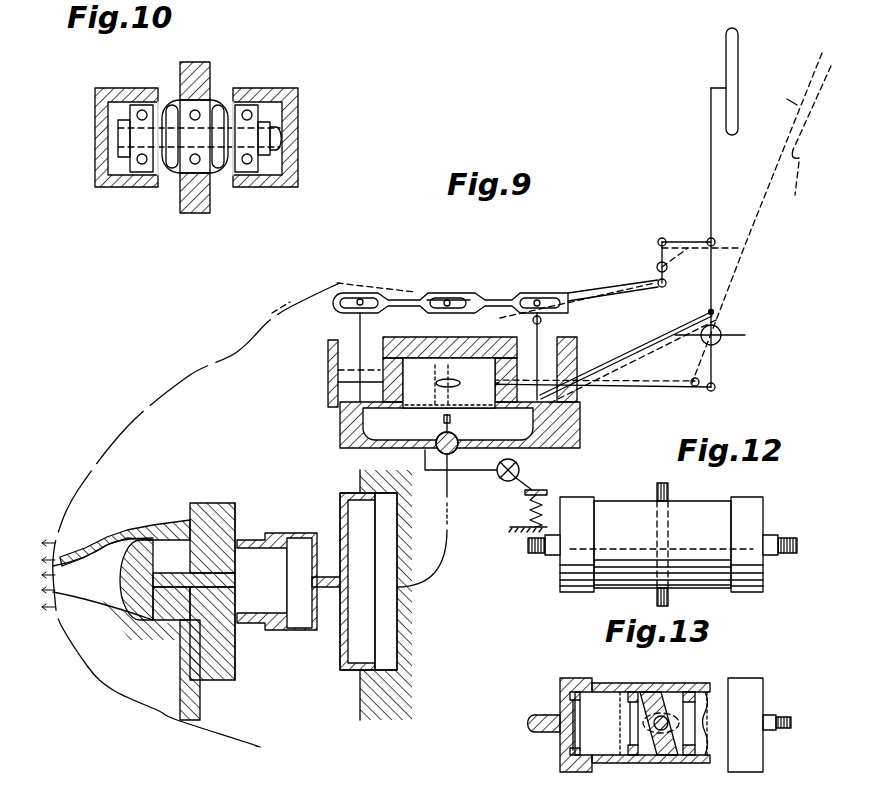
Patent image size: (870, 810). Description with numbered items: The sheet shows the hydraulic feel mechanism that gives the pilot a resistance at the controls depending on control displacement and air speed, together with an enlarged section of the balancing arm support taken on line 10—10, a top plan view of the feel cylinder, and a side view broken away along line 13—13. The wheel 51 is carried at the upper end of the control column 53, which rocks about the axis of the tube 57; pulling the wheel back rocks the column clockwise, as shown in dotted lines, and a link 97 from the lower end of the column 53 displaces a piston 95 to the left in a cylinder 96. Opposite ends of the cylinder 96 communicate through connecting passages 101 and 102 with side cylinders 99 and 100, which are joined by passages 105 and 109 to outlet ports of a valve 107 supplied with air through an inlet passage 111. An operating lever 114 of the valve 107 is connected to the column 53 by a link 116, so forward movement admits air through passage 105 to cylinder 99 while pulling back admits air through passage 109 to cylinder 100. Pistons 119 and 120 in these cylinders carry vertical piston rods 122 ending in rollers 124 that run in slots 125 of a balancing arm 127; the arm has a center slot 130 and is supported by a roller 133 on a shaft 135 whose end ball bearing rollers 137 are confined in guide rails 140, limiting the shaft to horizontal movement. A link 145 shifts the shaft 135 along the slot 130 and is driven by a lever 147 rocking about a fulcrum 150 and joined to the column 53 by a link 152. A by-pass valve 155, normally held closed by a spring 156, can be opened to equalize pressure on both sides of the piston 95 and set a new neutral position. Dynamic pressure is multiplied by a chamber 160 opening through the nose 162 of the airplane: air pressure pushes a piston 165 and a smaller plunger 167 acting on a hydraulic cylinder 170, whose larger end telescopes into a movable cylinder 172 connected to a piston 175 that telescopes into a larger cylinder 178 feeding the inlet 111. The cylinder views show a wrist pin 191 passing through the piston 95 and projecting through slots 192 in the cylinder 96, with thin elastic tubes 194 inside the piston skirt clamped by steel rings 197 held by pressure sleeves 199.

In FIG. 9, the section line 10 is at (417, 237).
In FIG. 9, the section line 13 is at (525, 540).
In FIG. 12, the section line 13 is at (720, 556).
In FIG. 9, the wheel 51 is at (732, 65).
In FIG. 9, the control column 53 is at (711, 160).
In FIG. 9, the tube 57 is at (722, 330).
In FIG. 9, the piston 95 is at (460, 362).
In FIG. 13, the piston 95 is at (662, 763).
In FIG. 9, the cylinder 96 is at (483, 362).
In FIG. 12, the cylinder 96 is at (690, 510).
In FIG. 13, the cylinder 96 is at (720, 750).
In FIG. 9, the link 97 is at (627, 388).
In FIG. 9, the side cylinder 99 is at (342, 335).
In FIG. 9, the side cylinder 100 is at (537, 360).
In FIG. 9, the connecting passage 101 is at (393, 408).
In FIG. 12, the connecting passage 101 is at (538, 556).
In FIG. 13, the connecting passage 101 is at (533, 732).
In FIG. 9, the connecting passage 102 is at (530, 455).
In FIG. 12, the connecting passage 102 is at (787, 538).
In FIG. 13, the connecting passage 102 is at (785, 715).
In FIG. 9, the passage 105 is at (363, 425).
In FIG. 9, the valve 107 is at (430, 452).
In FIG. 9, the passage 109 is at (560, 430).
In FIG. 9, the inlet passage 111 is at (447, 555).
In FIG. 9, the operating lever 114 is at (458, 432).
In FIG. 9, the link 116 is at (620, 356).
In FIG. 9, the piston 119 is at (345, 390).
In FIG. 9, the piston 120 is at (540, 380).
In FIG. 9, the piston rod 122 is at (358, 322).
In FIG. 9, the roller 124 is at (352, 300).
In FIG. 9, the slot 125 is at (370, 300).
In FIG. 10, the balancing arm 127 is at (206, 58).
In FIG. 9, the balancing arm 127 is at (412, 297).
In FIG. 10, the center slot 130 is at (203, 165).
In FIG. 9, the center slot 130 is at (430, 309).
In FIG. 10, the roller 133 is at (207, 103).
In FIG. 9, the roller 133 is at (447, 300).
In FIG. 10, the shaft 135 is at (280, 136).
In FIG. 10, the ball bearing rollers 137 is at (138, 167).
In FIG. 10, the guide rails 140 is at (298, 97).
In FIG. 10, the link 145 is at (172, 160).
In FIG. 9, the link 145 is at (638, 291).
In FIG. 9, the lever 147 is at (662, 242).
In FIG. 9, the fulcrum 150 is at (667, 271).
In FIG. 9, the link 152 is at (692, 242).
In FIG. 9, the by-pass valve 155 is at (500, 482).
In FIG. 9, the spring 156 is at (523, 512).
In FIG. 9, the chamber 160 is at (100, 590).
In FIG. 9, the nose opening 162 is at (125, 427).
In FIG. 9, the piston 165 is at (130, 620).
In FIG. 9, the plunger 167 is at (160, 597).
In FIG. 9, the hydraulic cylinder 170 is at (235, 580).
In FIG. 9, the cylinder 172 is at (300, 630).
In FIG. 9, the piston 175 is at (350, 670).
In FIG. 9, the cylinder 178 is at (388, 663).
In FIG. 12, the wrist pin 191 is at (668, 596).
In FIG. 13, the wrist pin 191 is at (648, 763).
In FIG. 13, the slots 192 is at (685, 685).
In FIG. 13, the thin tube 194 is at (570, 692).
In FIG. 13, the steel ring 197 is at (635, 692).
In FIG. 13, the pressure sleeve 199 is at (635, 710).